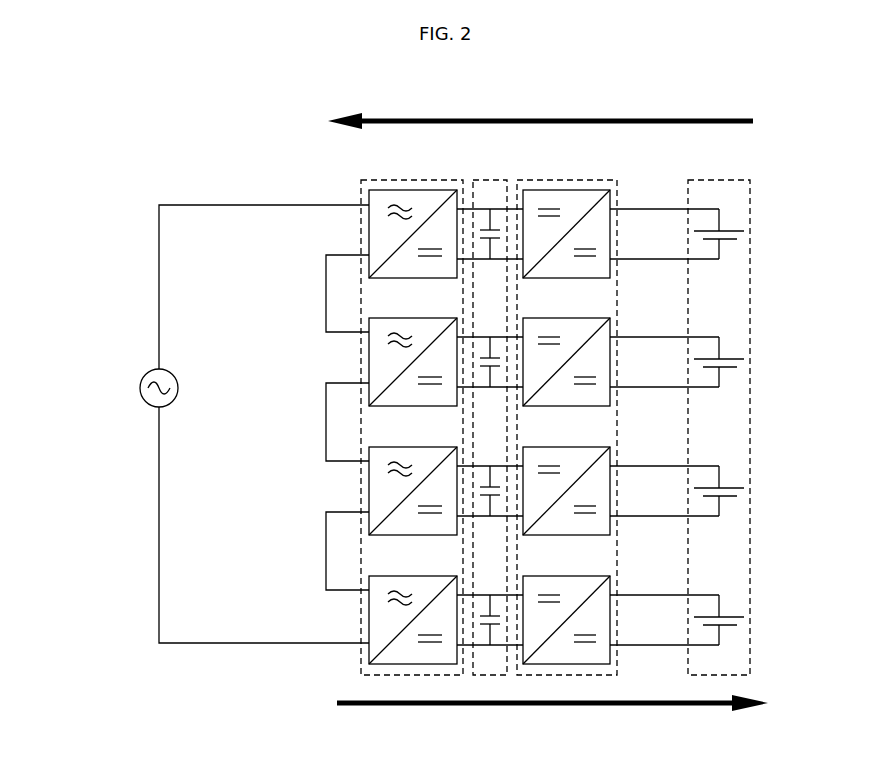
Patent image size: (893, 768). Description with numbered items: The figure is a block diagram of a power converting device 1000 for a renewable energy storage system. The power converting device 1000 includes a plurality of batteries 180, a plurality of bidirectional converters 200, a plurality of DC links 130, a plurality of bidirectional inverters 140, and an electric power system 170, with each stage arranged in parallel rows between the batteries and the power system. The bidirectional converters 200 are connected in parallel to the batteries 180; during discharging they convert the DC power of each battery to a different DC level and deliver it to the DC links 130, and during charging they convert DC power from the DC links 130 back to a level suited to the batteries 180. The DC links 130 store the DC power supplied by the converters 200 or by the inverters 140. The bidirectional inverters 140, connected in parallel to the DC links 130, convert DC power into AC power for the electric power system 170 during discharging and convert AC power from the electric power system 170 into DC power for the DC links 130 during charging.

The power converting device 1000 is at (818, 88).
The bidirectional inverters 140 is at (361, 180).
The DC links 130 is at (473, 180).
The bidirectional converters 200 is at (617, 180).
The batteries 180 is at (750, 180).
The electric power system 170 is at (145, 373).